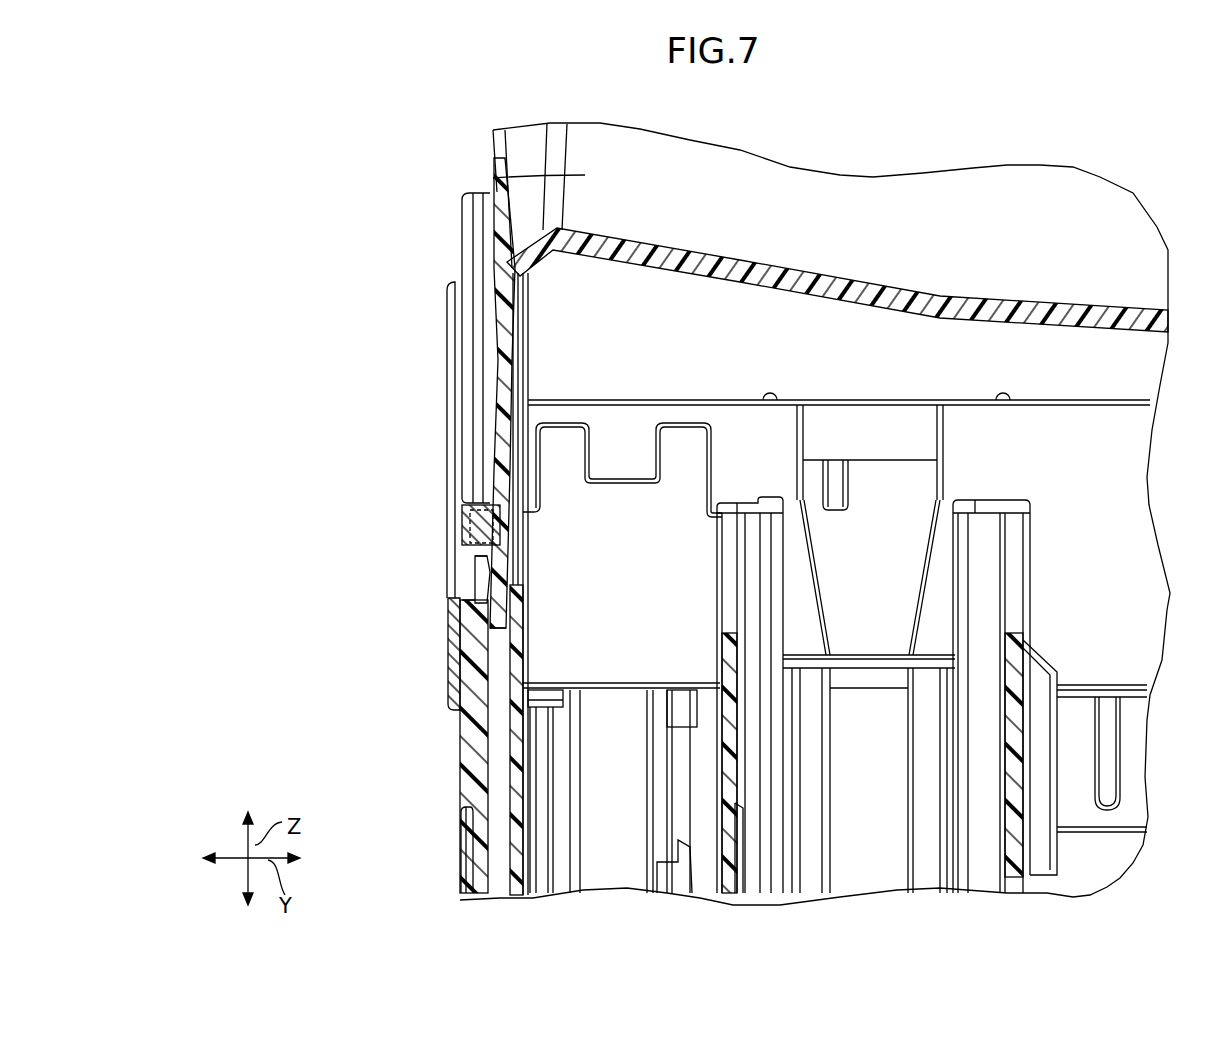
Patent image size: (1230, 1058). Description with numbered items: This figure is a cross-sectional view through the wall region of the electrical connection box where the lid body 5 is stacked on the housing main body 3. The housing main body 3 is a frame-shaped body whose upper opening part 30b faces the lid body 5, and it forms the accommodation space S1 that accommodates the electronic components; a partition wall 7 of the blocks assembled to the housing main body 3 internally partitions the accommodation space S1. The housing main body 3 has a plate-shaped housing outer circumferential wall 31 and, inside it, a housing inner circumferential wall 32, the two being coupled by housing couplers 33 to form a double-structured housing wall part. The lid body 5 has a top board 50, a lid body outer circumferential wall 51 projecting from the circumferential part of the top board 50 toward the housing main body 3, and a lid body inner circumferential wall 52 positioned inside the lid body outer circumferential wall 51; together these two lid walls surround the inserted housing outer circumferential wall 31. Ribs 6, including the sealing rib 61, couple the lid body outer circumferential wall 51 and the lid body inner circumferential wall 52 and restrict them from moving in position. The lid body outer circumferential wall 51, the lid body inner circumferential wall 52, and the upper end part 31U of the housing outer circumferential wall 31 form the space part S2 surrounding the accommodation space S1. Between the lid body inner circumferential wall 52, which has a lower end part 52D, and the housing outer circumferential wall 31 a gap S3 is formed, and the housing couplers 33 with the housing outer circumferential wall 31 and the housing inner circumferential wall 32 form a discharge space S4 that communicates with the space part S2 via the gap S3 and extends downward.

The lid body 5 is at (493, 143).
The top board 50 is at (493, 178).
The partition wall 7 is at (642, 517).
The accommodation space S1 is at (745, 470).
The sealing rib 61 is at (473, 517).
The rib 6 is at (415, 395).
The space part S2 is at (480, 546).
The upper end part 31U is at (472, 556).
The housing outer circumferential wall 31 is at (487, 572).
The gap S3 is at (475, 598).
The lid body outer circumferential wall 51 is at (447, 647).
The discharge space S4 is at (497, 690).
The housing coupler 33 is at (498, 720).
The lid body inner circumferential wall 52 is at (507, 543).
The opening part 30b is at (520, 550).
The lower end part 52D is at (515, 628).
The housing inner circumferential wall 32 is at (525, 668).
The housing main body 3 is at (455, 867).